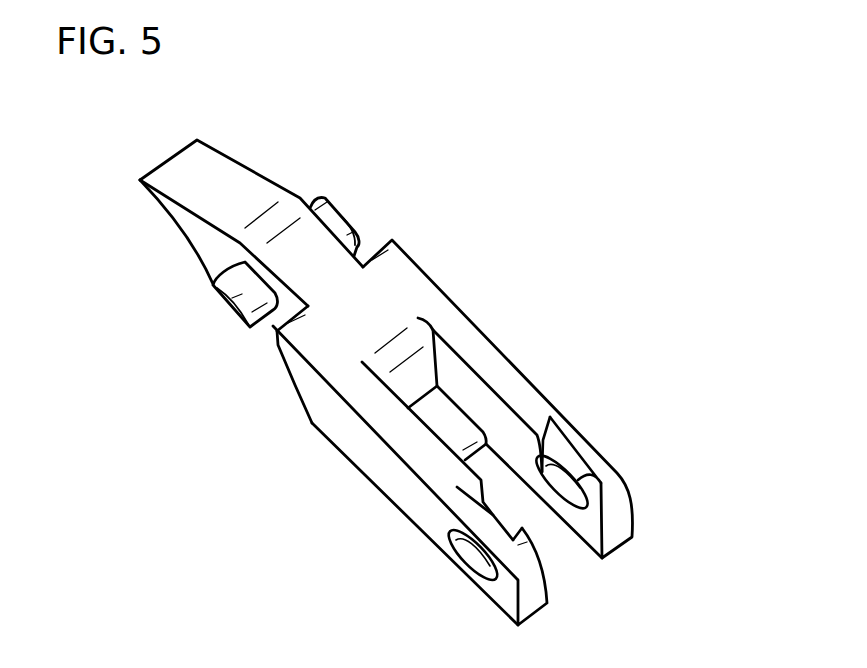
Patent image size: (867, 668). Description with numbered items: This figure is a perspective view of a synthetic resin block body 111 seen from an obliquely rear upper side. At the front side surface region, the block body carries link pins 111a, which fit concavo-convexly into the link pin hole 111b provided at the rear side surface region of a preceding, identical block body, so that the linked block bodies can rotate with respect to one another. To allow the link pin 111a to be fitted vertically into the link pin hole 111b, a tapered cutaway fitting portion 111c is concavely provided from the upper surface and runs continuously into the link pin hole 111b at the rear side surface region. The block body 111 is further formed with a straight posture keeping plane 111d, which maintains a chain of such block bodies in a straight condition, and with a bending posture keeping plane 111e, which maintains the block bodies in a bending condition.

The synthetic resin block body 111 is at (575, 222).
The link pin 111a is at (342, 213).
The link pin hole 111b is at (566, 470).
The tapered cutaway fitting portion 111c is at (553, 448).
The straight posture keeping plane 111d is at (157, 203).
The bending posture keeping plane 111e is at (288, 383).